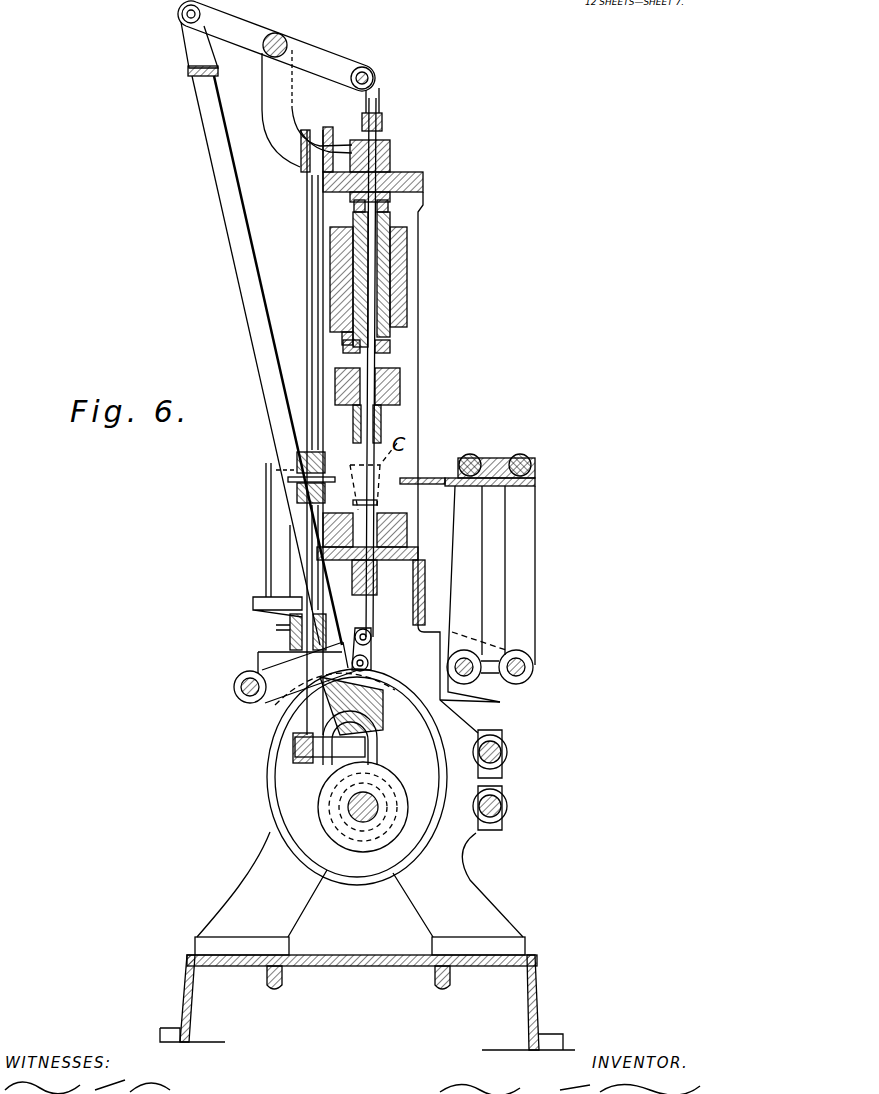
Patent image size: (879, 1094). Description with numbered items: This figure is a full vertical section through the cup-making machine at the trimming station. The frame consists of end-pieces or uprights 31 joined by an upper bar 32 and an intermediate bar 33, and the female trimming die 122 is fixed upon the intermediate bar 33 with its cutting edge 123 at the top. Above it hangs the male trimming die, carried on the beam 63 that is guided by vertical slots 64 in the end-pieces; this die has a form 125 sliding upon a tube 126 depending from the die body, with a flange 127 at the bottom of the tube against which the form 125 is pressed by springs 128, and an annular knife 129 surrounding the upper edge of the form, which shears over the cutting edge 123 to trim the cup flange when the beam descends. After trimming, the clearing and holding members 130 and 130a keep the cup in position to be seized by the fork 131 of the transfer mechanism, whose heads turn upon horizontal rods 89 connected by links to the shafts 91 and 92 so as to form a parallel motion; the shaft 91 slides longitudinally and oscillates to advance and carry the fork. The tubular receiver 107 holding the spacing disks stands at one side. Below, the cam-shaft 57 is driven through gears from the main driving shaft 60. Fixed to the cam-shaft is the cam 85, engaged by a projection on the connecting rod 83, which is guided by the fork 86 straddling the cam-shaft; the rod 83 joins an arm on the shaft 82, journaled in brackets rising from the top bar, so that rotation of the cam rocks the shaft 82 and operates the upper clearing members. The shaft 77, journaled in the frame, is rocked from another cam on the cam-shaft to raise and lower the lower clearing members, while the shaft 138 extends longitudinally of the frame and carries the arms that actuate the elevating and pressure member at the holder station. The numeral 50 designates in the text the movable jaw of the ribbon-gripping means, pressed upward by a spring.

The shaft 82 is at (288, 47).
The connecting rod 83 is at (240, 280).
The vertical slots 64 is at (380, 210).
The clearing and holding member 130a is at (372, 328).
The upper bar 32 is at (424, 187).
The end-pieces or uprights 31 is at (418, 362).
The beam 63 is at (405, 290).
The springs 128 is at (350, 380).
The annular knife 129 is at (405, 407).
The form 125 is at (380, 423).
The tube 126 is at (340, 403).
The flange 127 is at (340, 425).
The fork 131 is at (413, 475).
The clearing and holding member 130 is at (395, 488).
The horizontal rods or shafts 89 is at (520, 455).
The cutting edge 123 is at (395, 510).
The intermediate bar 33 is at (502, 576).
The shaft 92 is at (530, 672).
The shaft 91 is at (488, 680).
The shaft 138 is at (505, 755).
The main driving shaft 60 is at (505, 807).
The tubular receiver 107 is at (280, 542).
The female trimming die 122 is at (337, 510).
The shaft 77 is at (250, 690).
The fork 86 is at (330, 780).
The cam-shaft 57 is at (385, 800).
The cam 85 is at (315, 780).
The movable jaw 50 is at (539, 1012).